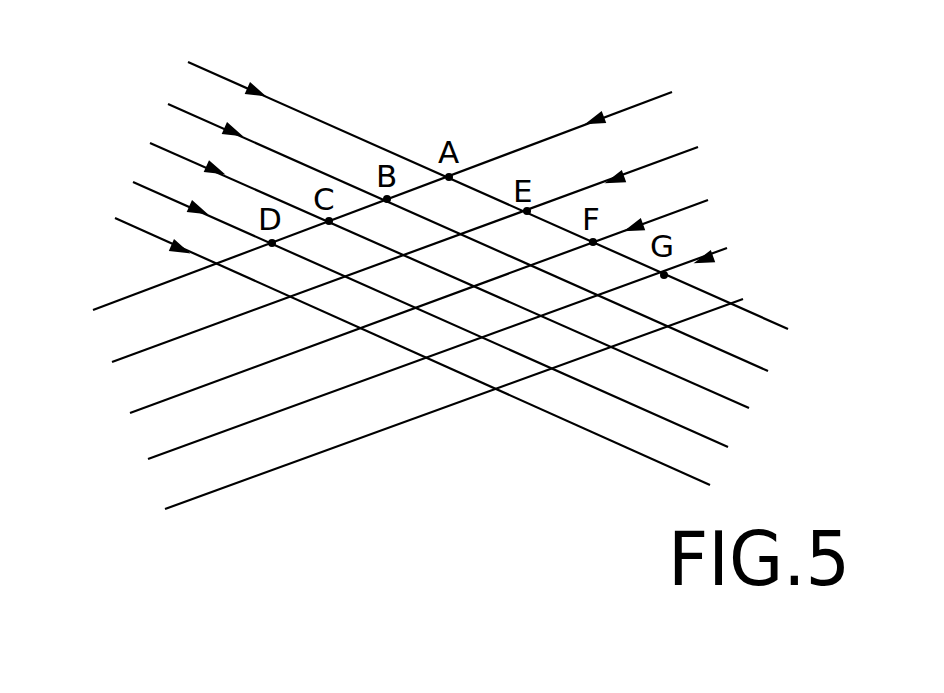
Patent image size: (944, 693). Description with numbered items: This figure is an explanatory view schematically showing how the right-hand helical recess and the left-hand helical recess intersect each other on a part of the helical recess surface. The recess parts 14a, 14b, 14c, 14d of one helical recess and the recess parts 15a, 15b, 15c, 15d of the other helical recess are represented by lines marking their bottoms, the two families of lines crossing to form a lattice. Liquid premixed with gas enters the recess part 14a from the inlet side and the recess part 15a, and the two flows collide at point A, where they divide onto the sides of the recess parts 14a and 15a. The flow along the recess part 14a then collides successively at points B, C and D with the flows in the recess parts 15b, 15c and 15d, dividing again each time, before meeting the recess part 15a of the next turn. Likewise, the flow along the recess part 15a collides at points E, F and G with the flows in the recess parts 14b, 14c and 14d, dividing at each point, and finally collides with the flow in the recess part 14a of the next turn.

The recess part 15a is at (412, 248).
The recess part 15b is at (430, 213).
The recess part 15c is at (412, 252).
The recess part 15d is at (394, 294).
The recess part 14a is at (453, 290).
The recess part 14b is at (441, 244).
The recess part 14c is at (453, 296).
The recess part 14d is at (477, 344).